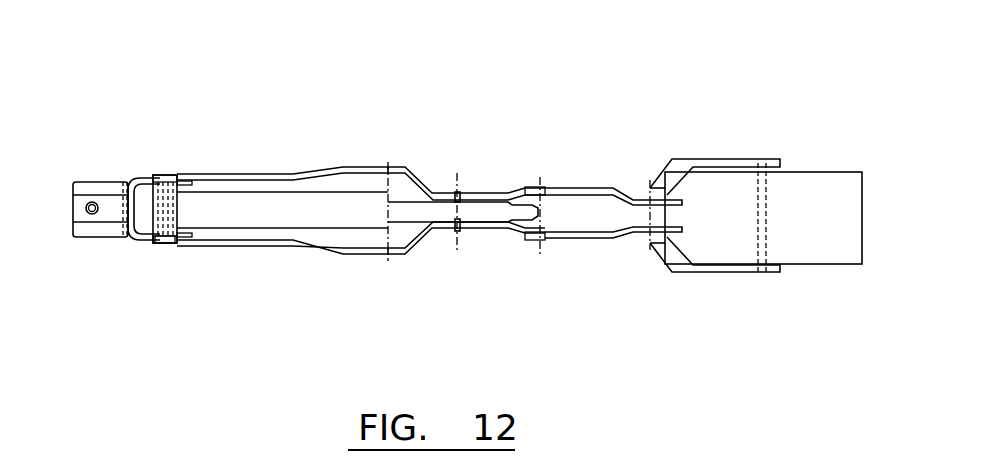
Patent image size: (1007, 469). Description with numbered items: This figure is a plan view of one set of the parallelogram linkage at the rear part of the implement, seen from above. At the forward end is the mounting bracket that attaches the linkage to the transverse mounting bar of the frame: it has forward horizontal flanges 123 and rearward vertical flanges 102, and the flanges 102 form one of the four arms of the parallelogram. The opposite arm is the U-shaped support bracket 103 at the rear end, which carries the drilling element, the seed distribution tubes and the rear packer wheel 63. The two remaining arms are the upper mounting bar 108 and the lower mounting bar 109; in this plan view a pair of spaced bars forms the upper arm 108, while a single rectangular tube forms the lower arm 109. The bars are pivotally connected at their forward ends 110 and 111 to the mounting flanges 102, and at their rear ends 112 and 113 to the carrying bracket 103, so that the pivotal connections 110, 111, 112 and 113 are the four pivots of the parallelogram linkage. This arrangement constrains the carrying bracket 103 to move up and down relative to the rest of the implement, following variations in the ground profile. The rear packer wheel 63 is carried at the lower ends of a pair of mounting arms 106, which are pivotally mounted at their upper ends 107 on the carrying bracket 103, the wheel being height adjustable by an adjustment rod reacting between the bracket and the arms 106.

The rear packer wheel 63 is at (818, 185).
The rearward vertical flanges 102 is at (150, 178).
The U-shaped support bracket 103 is at (589, 230).
The mounting arms 106 is at (733, 160).
The upper ends of mounting arms 107 is at (542, 240).
The upper mounting bar 108 is at (243, 242).
The lower mounting bar 109 is at (335, 212).
The forward end of upper mounting bar 110 is at (168, 178).
The forward end of lower mounting bar 111 is at (153, 243).
The rear end of upper mounting bar 112 is at (457, 190).
The rear end of lower mounting bar 113 is at (457, 231).
The forward horizontal flanges 123 is at (88, 180).